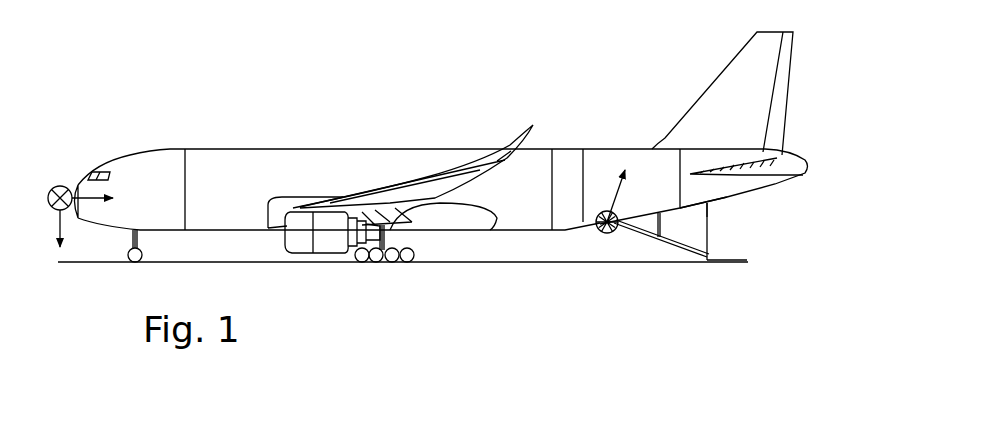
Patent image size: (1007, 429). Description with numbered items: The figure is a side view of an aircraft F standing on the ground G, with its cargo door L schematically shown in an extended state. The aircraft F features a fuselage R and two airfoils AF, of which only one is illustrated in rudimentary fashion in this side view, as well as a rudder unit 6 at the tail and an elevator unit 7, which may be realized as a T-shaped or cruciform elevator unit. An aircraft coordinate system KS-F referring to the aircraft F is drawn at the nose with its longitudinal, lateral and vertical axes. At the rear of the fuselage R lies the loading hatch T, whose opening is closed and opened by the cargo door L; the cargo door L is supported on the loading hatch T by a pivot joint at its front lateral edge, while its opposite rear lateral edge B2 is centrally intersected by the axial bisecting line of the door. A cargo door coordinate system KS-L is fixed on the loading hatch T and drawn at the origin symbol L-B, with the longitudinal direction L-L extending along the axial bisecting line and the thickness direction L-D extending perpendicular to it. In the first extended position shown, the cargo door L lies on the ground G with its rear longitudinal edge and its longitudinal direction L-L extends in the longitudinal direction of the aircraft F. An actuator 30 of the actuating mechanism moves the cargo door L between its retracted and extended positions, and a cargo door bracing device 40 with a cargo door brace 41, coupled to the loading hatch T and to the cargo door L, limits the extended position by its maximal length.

The aircraft F is at (238, 97).
The fuselage R is at (427, 147).
The rudder unit 6 is at (697, 50).
The elevator unit 7 is at (780, 155).
The airfoil AF is at (459, 185).
The aircraft coordinate system KS-F is at (80, 148).
The cargo door coordinate system KS-L is at (583, 210).
The cargo reference point L-B is at (597, 224).
The thickness direction L-D is at (606, 187).
The actuator 30 is at (665, 240).
The cargo door L is at (632, 245).
The longitudinal direction L-L is at (672, 247).
The loading hatch T is at (677, 220).
The cargo door brace 41 is at (708, 217).
The cargo door bracing device 40 is at (745, 208).
The rear lateral edge B2 is at (728, 278).
The ground G is at (253, 263).